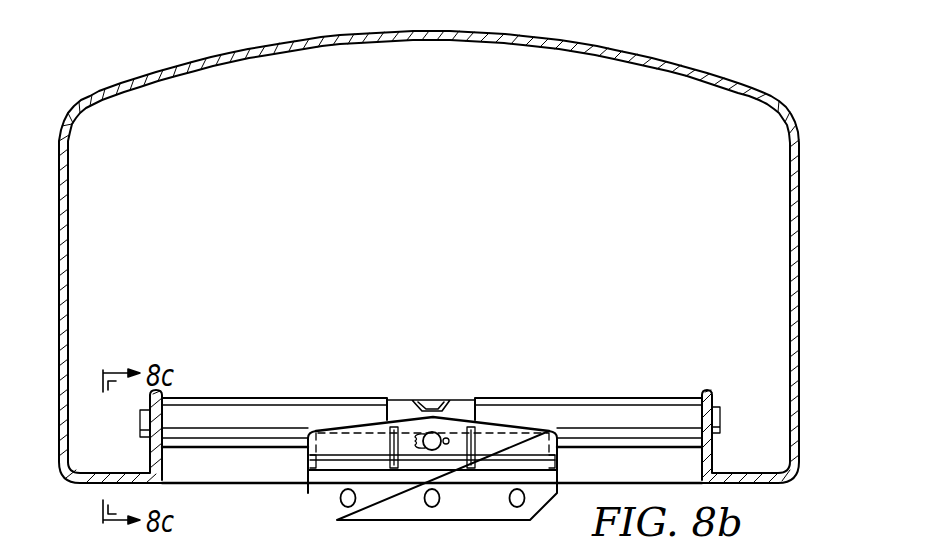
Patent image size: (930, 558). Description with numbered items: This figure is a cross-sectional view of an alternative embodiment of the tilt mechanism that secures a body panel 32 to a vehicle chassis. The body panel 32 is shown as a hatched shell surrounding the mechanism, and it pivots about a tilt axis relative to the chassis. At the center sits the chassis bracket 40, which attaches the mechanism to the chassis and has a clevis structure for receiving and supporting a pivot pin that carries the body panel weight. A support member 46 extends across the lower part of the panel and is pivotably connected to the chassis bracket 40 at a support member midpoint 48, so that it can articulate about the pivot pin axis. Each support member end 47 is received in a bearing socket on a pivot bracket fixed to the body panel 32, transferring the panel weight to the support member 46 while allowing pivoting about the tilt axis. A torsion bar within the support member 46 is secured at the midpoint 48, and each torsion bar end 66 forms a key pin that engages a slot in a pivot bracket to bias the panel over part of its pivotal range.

The body panel 32 is at (800, 257).
The chassis bracket 40 is at (488, 510).
The support member 46 is at (242, 447).
The support member end 47 is at (240, 398).
The support member midpoint 48 is at (452, 400).
The torsion bar end 66 is at (718, 408).